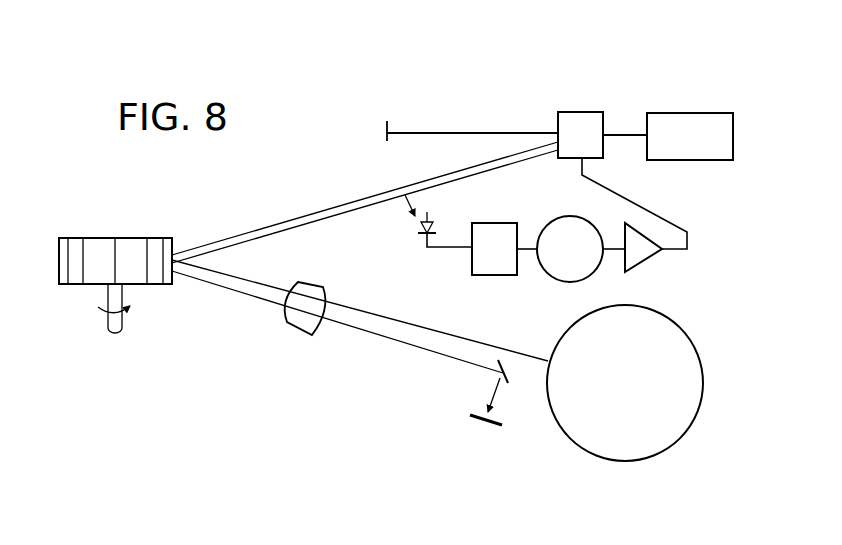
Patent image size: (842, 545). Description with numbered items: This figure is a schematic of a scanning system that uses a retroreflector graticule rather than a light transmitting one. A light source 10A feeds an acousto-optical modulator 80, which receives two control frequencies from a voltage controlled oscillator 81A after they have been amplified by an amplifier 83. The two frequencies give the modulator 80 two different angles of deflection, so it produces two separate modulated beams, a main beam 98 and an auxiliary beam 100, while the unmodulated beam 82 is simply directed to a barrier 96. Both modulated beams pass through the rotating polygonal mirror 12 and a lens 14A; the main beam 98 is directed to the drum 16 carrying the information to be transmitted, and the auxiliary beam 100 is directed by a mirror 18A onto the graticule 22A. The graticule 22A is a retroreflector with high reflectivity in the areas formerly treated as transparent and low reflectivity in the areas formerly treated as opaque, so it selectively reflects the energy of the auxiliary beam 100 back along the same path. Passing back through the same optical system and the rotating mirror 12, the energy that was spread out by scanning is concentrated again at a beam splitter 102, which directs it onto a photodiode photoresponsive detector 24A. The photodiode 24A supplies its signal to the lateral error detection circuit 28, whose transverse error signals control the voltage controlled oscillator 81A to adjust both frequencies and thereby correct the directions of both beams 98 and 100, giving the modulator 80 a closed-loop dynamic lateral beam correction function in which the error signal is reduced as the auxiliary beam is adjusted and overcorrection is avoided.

The rotating polygonal mirror 12 is at (127, 243).
The unmodulated beam 82 is at (425, 133).
The barrier 96 is at (386, 126).
The acousto-optical modulator 80 is at (577, 114).
The laser source 10A is at (690, 119).
The beam splitter 102 is at (426, 203).
The photodiode photoresponsive detector 24A is at (422, 238).
The lateral error detection circuit 28 is at (490, 276).
The voltage controlled oscillator 81A is at (578, 203).
The amplifier 83 is at (647, 262).
The lens 14A is at (296, 332).
The main beam 98 is at (384, 315).
The auxiliary beam 100 is at (382, 338).
The beam splitter mirror 18A is at (509, 381).
The graticule 22A is at (477, 422).
The drum 16 is at (628, 463).